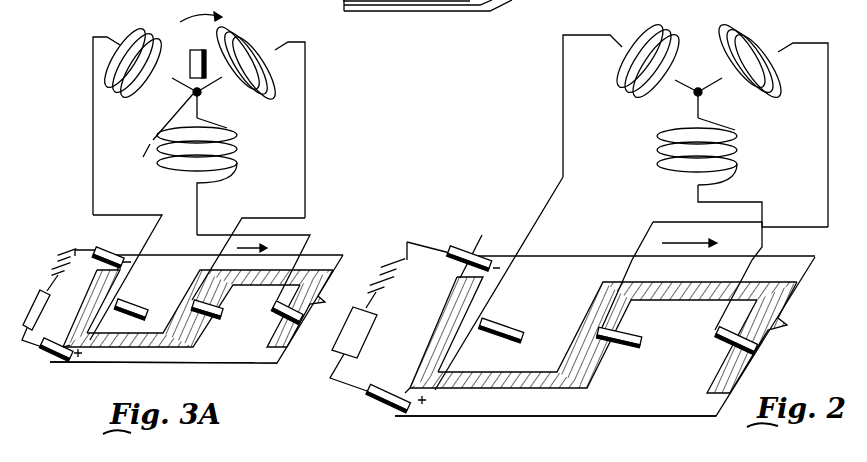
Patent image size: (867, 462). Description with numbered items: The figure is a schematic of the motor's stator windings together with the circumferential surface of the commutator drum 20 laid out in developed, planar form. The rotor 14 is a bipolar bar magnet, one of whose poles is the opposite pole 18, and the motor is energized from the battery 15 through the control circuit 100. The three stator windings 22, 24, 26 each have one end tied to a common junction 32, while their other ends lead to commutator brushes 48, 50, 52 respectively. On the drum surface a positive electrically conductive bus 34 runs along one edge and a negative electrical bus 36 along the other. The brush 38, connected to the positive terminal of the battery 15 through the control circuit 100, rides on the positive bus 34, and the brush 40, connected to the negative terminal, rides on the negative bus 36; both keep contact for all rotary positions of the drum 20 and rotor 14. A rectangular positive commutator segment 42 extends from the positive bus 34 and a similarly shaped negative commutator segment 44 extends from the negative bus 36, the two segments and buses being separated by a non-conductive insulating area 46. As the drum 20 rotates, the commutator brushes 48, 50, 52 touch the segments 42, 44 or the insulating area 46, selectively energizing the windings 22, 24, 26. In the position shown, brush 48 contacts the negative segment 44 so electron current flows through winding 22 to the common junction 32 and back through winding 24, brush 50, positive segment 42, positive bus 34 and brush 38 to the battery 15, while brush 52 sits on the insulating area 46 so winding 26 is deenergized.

In FIG. 3A, the rotor 14 is at (192, 34).
In FIG. 3A, the battery 15 is at (55, 257).
In FIG. 2, the battery 15 is at (385, 295).
In FIG. 2, the opposite pole 18 is at (430, 2).
In FIG. 3A, the commutator drum 20 is at (173, 364).
In FIG. 2, the commutator drum 20 is at (547, 417).
In FIG. 3A, the stator winding 22 is at (123, 93).
In FIG. 2, the stator winding 22 is at (620, 92).
In FIG. 3A, the stator winding 24 is at (262, 95).
In FIG. 2, the stator winding 24 is at (773, 97).
In FIG. 3A, the stator winding 26 is at (235, 155).
In FIG. 2, the stator winding 26 is at (735, 163).
In FIG. 3A, the common junction 32 is at (199, 94).
In FIG. 2, the common junction 32 is at (700, 94).
In FIG. 3A, the positive electrically conductive bus 34 is at (140, 357).
In FIG. 2, the positive electrically conductive bus 34 is at (487, 408).
In FIG. 3A, the negative electrical bus 36 is at (182, 240).
In FIG. 2, the negative electrical bus 36 is at (558, 250).
In FIG. 3A, the brush 38 is at (45, 353).
In FIG. 2, the brush 38 is at (377, 398).
In FIG. 3A, the brush 40 is at (107, 238).
In FIG. 2, the brush 40 is at (463, 257).
In FIG. 3A, the positive commutator segment 42 is at (265, 338).
In FIG. 2, the positive commutator segment 42 is at (714, 370).
In FIG. 3A, the negative commutator segment 44 is at (96, 325).
In FIG. 2, the negative commutator segment 44 is at (454, 342).
In FIG. 3A, the non-conductive insulating area 46 is at (193, 302).
In FIG. 2, the non-conductive insulating area 46 is at (582, 338).
In FIG. 3A, the commutator brush 48 is at (135, 304).
In FIG. 2, the commutator brush 48 is at (505, 338).
In FIG. 3A, the commutator brush 50 is at (222, 307).
In FIG. 2, the commutator brush 50 is at (625, 343).
In FIG. 3A, the commutator brush 52 is at (278, 311).
In FIG. 2, the commutator brush 52 is at (727, 338).
In FIG. 3A, the control circuit 100 is at (37, 297).
In FIG. 2, the control circuit 100 is at (362, 345).